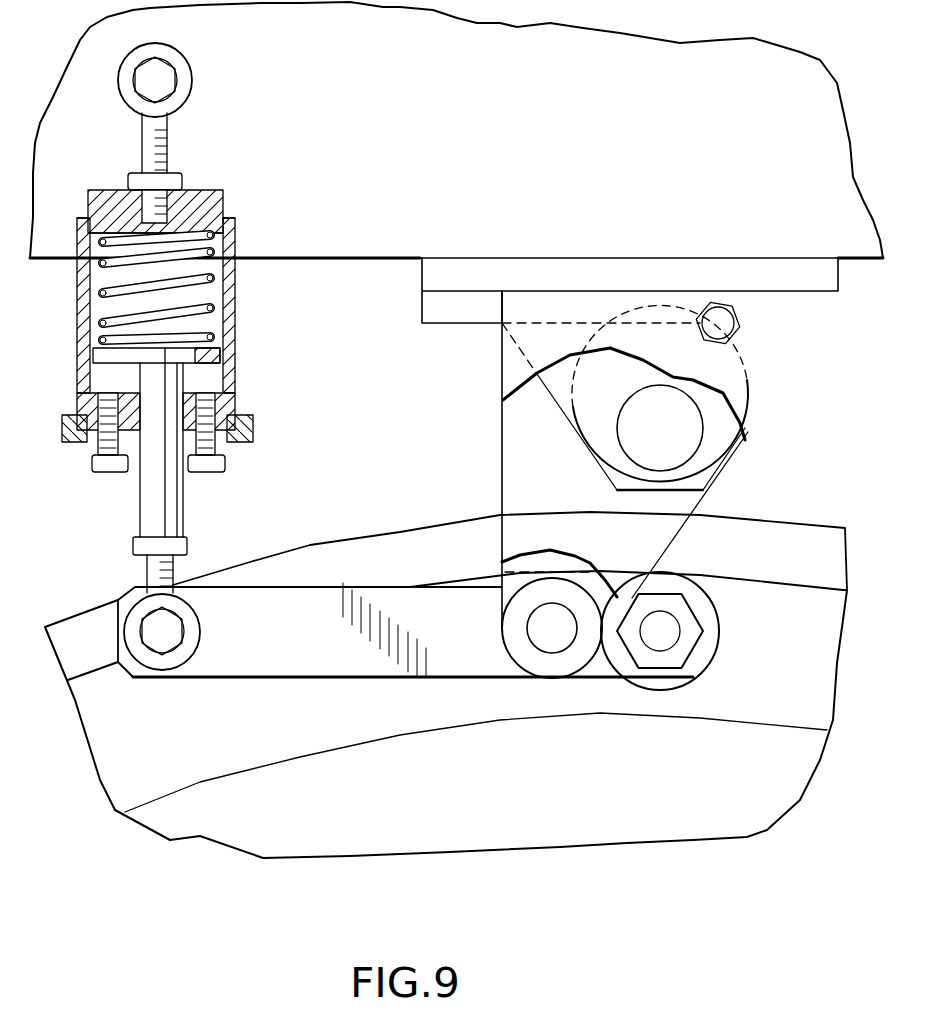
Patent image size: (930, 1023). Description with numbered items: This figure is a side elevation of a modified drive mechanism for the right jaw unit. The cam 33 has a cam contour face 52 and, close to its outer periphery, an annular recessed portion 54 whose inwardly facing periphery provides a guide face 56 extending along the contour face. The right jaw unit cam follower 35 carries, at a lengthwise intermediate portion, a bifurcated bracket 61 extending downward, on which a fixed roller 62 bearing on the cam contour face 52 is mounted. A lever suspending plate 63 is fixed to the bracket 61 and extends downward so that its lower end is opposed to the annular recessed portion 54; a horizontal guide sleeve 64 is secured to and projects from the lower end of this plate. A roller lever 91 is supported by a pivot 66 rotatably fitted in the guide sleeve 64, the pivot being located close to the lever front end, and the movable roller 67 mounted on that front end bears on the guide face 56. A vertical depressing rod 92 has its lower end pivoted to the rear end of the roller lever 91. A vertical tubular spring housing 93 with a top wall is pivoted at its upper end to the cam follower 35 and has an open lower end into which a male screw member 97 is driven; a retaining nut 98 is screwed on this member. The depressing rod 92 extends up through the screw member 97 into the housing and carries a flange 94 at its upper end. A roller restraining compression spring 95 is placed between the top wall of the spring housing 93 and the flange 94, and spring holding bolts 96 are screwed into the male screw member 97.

The cam 33 is at (393, 520).
The right jaw unit cam follower 35 is at (363, 245).
The cam contour face 52 is at (770, 517).
The annular recessed portion 54 is at (327, 718).
The guide face 56 is at (787, 590).
The bifurcated bracket 61 is at (583, 420).
The fixed roller 62 is at (590, 480).
The lever suspending plate 63 is at (513, 567).
The horizontal guide sleeve 64 is at (548, 672).
The pivot 66 is at (563, 658).
The movable roller 67 is at (660, 692).
The roller lever 91 is at (462, 668).
The vertical depressing rod 92 is at (140, 525).
The spring housing 93 is at (232, 316).
The flange 94 is at (210, 360).
The roller restraining compression spring 95 is at (207, 278).
The spring holding bolts 96 is at (223, 462).
The male screw member 97 is at (218, 401).
The retaining nut 98 is at (250, 422).